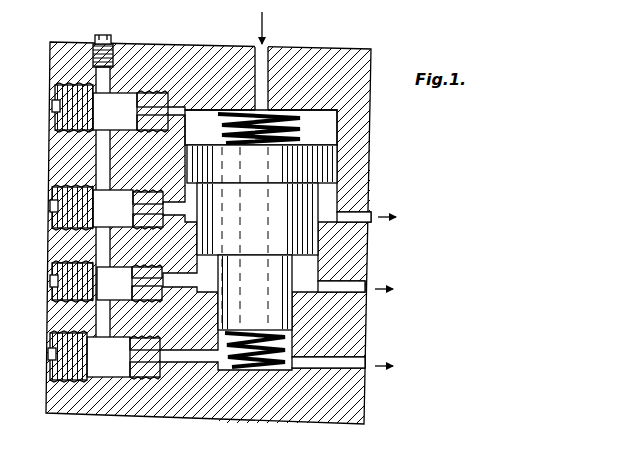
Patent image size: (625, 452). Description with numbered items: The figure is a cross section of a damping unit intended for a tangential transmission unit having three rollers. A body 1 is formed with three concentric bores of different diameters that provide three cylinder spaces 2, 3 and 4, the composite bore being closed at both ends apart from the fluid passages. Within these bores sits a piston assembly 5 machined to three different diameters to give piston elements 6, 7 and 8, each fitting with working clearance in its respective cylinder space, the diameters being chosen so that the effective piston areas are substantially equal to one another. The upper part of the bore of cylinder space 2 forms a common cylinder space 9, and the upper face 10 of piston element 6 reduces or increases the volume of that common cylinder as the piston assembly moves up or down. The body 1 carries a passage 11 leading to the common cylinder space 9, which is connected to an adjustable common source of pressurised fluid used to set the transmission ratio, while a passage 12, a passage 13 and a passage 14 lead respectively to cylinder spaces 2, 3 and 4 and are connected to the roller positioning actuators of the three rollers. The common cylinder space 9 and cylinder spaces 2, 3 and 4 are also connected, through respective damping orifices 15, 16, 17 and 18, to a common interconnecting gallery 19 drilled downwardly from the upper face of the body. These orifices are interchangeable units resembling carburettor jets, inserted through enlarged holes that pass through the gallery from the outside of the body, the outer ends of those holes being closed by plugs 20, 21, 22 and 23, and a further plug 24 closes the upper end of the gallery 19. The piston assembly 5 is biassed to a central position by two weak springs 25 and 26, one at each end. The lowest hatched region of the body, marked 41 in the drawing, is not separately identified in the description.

The body 1 is at (155, 52).
The cylinder space 2 is at (330, 202).
The cylinder space 3 is at (318, 275).
The cylinder space 4 is at (280, 372).
The piston assembly 5 is at (252, 228).
The piston element 6 is at (337, 178).
The piston element 7 is at (322, 257).
The piston element 8 is at (305, 316).
The common cylinder space 9 is at (338, 146).
The upper face of piston element 10 is at (207, 143).
The passage 11 is at (264, 46).
The passage 12 is at (374, 220).
The passage 13 is at (370, 289).
The passage 14 is at (370, 368).
The damping orifice 15 is at (143, 112).
The damping orifice 16 is at (138, 208).
The damping orifice 17 is at (135, 285).
The damping orifice 18 is at (132, 357).
The interconnecting gallery 19 is at (96, 160).
The plug 20 is at (56, 97).
The plug 21 is at (54, 224).
The plug 22 is at (54, 268).
The plug 23 is at (50, 343).
The plug 24 is at (105, 44).
The spring 25 is at (296, 128).
The spring 26 is at (230, 370).
The body 41 is at (206, 445).